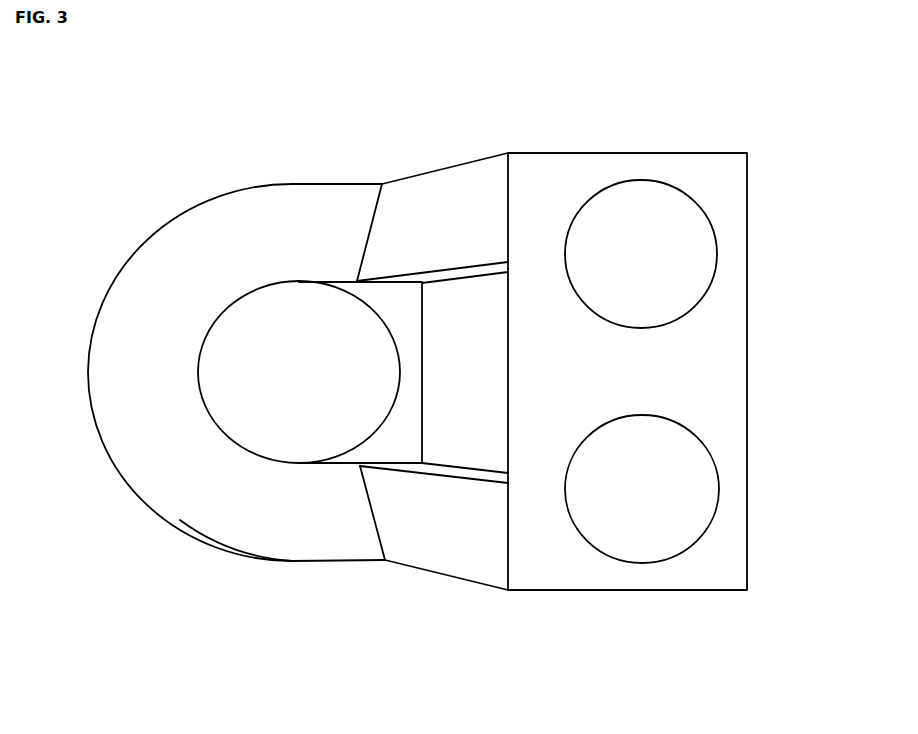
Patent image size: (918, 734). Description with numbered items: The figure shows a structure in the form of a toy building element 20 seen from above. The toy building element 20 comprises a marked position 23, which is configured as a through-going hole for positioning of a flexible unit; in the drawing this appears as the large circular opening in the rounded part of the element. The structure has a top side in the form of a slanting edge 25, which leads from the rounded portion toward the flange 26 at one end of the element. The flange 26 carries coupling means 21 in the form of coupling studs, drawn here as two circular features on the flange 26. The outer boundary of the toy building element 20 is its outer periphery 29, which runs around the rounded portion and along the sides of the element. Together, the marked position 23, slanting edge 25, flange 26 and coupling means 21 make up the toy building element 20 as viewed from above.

The toy building element 20 is at (434, 353).
The coupling means 21 is at (687, 263).
The marked position 23 is at (235, 333).
The slanting edge 25 is at (205, 258).
The flange 26 is at (568, 170).
The outer periphery 29 is at (220, 548).